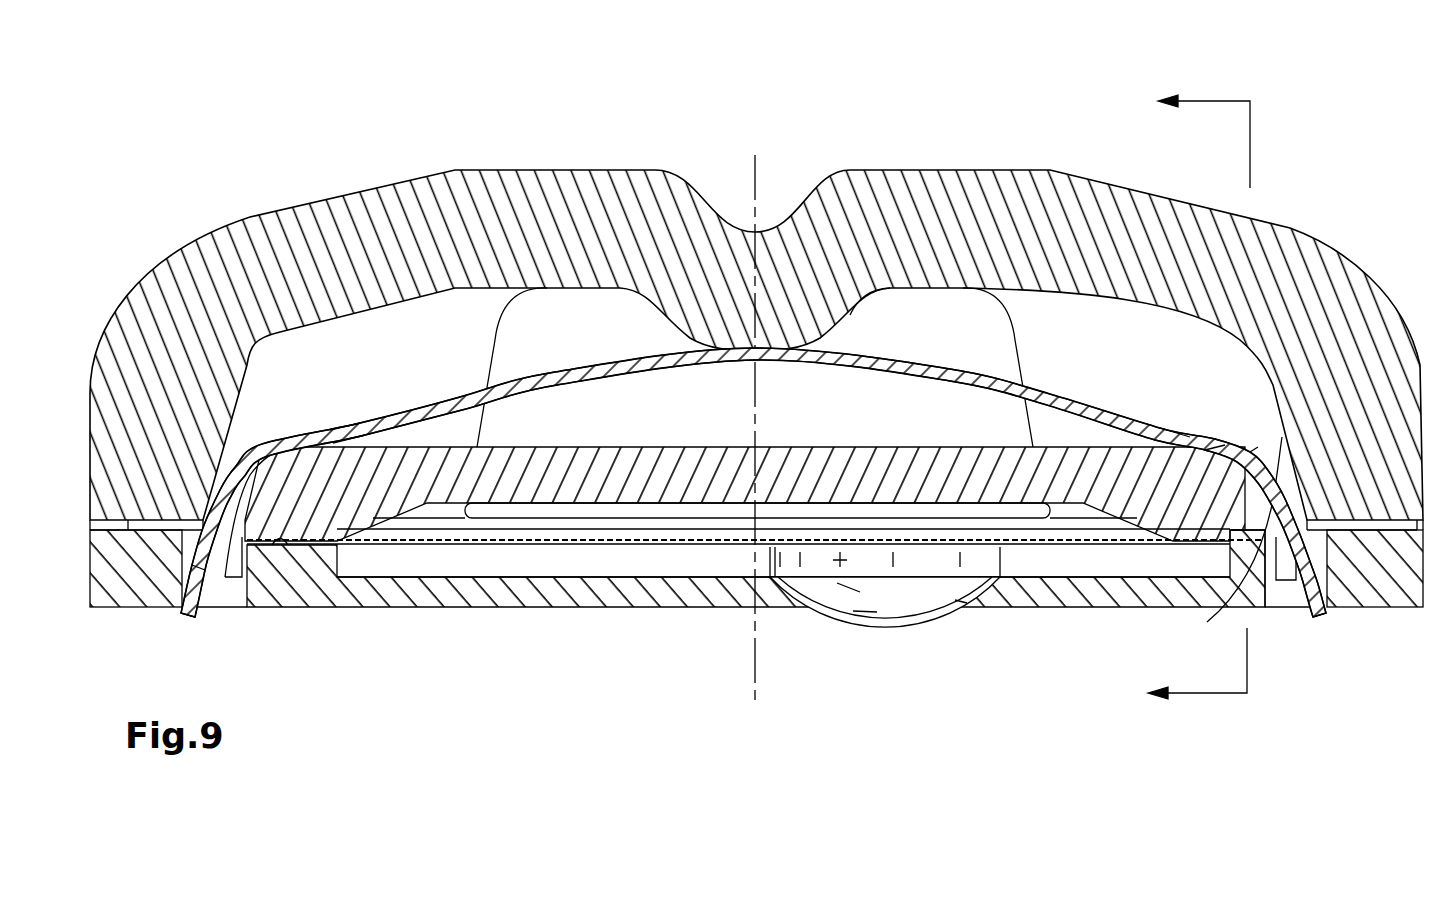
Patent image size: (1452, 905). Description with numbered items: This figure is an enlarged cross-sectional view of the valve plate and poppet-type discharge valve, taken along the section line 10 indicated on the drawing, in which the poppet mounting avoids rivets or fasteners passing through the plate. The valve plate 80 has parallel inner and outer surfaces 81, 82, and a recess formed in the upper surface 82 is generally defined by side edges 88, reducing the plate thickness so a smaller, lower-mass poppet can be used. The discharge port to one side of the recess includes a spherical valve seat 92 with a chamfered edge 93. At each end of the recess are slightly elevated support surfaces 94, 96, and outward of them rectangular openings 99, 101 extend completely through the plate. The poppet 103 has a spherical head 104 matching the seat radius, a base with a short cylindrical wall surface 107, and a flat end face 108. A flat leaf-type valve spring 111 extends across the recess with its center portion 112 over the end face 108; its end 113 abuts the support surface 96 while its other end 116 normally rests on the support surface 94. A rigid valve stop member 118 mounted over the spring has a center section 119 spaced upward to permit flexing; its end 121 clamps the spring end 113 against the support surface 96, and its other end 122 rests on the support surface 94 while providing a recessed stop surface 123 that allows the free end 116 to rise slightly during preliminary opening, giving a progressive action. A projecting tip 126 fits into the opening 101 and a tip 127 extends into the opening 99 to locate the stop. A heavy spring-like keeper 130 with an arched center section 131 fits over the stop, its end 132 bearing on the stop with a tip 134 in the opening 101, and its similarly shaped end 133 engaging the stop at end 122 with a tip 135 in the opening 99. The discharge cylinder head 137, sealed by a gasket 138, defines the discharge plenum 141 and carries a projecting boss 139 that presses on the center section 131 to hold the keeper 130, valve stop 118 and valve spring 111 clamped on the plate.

The section line 10 is at (1183, 399).
The valve plate 80 is at (487, 604).
The inner side or surface 81 is at (617, 610).
The outer side or surface 82 is at (128, 528).
The side edges 88 is at (410, 565).
The spherical valve seat 92 is at (1000, 560).
The chamfered edge 93 is at (967, 605).
The support surface 94 is at (1282, 582).
The support surface 96 is at (275, 540).
The rectangular opening 99 is at (1302, 592).
The rectangular opening 101 is at (209, 603).
The poppet 103 is at (890, 595).
The spherical head 104 is at (920, 625).
The cylindrical wall surface 107 is at (825, 567).
The flat end face 108 is at (857, 540).
The valve spring 111 is at (607, 543).
The center portion 112 is at (778, 540).
The valve spring end 113 is at (305, 548).
The valve spring end 116 is at (1255, 447).
The valve stop member 118 is at (343, 455).
The center section 119 is at (722, 453).
The end of valve stop 121 is at (282, 484).
The end of valve stop 122 is at (1223, 440).
The recessed stop surface 123 is at (1225, 541).
The projecting tip 126 is at (233, 580).
The tip 127 is at (1292, 582).
The keeper 130 is at (1047, 397).
The arched center section 131 is at (702, 350).
The end of keeper 132 is at (345, 450).
The end of keeper 133 is at (1187, 437).
The tip 134 is at (183, 613).
The tip 135 is at (1325, 617).
The discharge cylinder head 137 is at (433, 215).
The gasket 138 is at (1417, 527).
The projecting boss 139 is at (856, 312).
The discharge plenum 141 is at (470, 332).